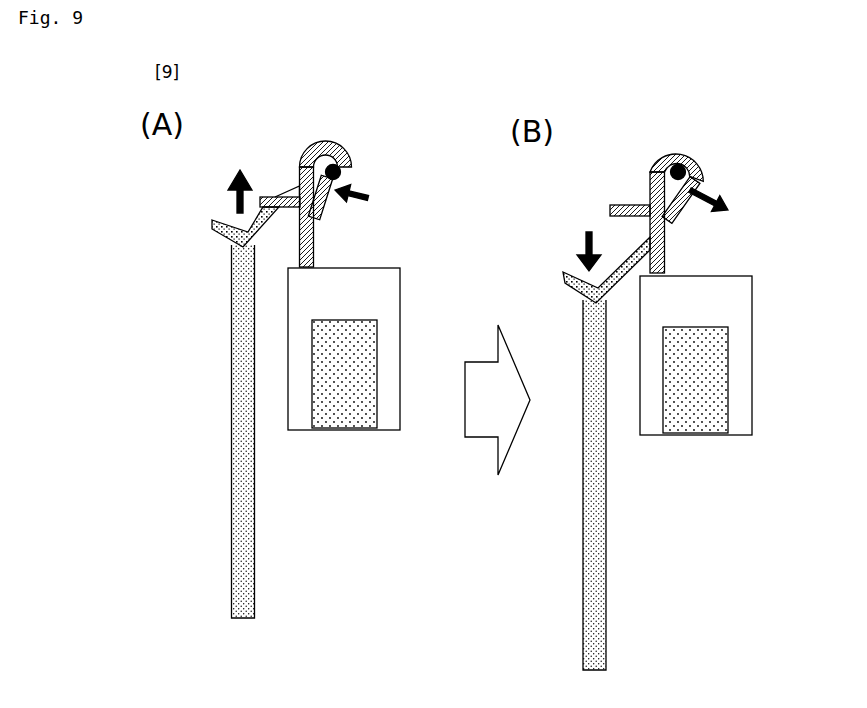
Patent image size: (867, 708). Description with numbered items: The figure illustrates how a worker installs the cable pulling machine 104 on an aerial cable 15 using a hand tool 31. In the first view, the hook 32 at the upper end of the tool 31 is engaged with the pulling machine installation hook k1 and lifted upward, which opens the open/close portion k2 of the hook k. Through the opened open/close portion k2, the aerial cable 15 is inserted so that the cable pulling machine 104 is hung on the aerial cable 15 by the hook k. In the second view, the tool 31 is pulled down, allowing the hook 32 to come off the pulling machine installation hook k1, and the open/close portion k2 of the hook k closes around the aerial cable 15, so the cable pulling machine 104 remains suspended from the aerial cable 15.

The aerial cable 15 is at (340, 177).
The tool 31 is at (231, 537).
The hook 32 is at (212, 224).
The cable pulling machine 104 is at (399, 244).
The hook k is at (325, 141).
The pulling machine installation hook k1 is at (266, 196).
The open/close portion k2 is at (319, 219).